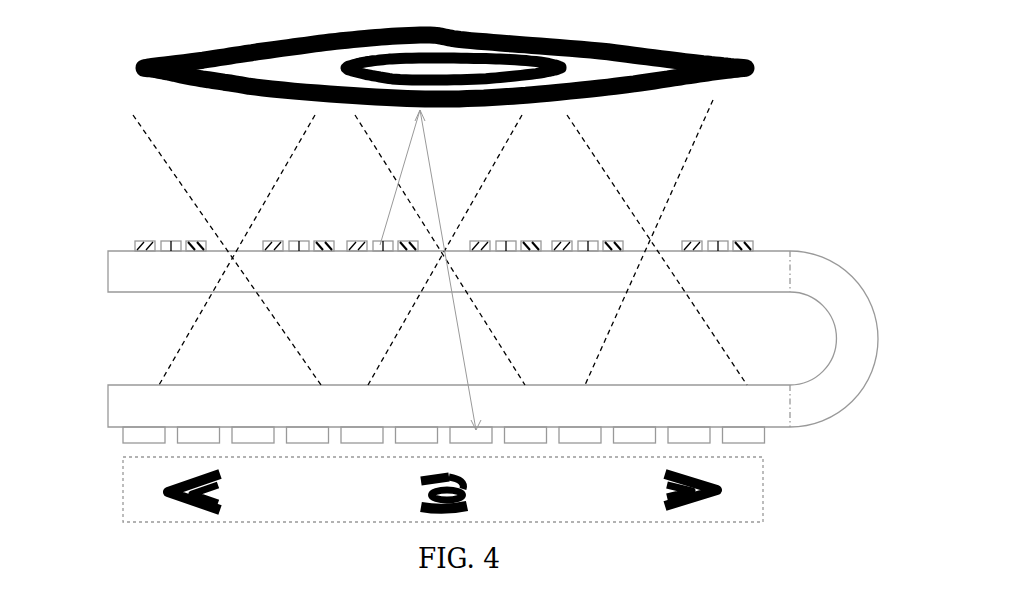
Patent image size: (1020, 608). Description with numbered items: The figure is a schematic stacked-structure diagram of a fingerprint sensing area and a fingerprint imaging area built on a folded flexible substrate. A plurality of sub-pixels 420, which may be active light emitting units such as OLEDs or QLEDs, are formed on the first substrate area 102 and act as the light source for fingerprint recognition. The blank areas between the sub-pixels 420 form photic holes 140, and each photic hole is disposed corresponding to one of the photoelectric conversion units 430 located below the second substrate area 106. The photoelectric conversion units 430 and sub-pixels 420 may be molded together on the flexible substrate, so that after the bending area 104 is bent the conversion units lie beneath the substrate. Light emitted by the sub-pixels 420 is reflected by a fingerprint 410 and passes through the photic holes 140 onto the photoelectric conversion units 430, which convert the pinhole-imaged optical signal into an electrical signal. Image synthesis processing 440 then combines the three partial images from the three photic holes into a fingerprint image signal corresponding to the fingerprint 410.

The fingerprint 410 is at (410, 61).
The sub-pixels 420 is at (410, 222).
The first substrate area 102 is at (108, 269).
The second substrate area 106 is at (108, 405).
The bending area 104 is at (841, 316).
The photic holes 140 is at (446, 242).
The photoelectric conversion units 430 is at (123, 431).
The image synthesis processing 440 is at (123, 490).